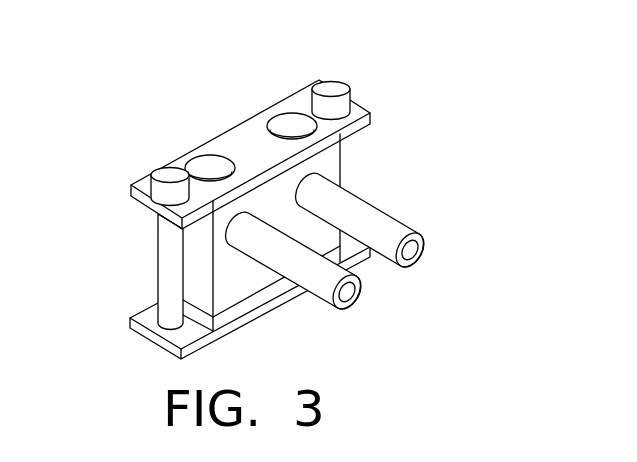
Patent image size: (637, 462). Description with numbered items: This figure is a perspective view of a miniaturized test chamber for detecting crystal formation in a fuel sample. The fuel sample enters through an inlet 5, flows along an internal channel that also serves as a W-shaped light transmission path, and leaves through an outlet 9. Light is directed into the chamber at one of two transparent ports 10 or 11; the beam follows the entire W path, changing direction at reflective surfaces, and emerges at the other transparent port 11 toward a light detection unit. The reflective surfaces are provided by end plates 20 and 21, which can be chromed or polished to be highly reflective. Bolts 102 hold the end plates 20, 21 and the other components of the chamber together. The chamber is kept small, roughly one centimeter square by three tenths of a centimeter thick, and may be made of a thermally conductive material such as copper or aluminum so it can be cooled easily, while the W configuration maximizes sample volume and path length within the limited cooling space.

The inlet 5 is at (285, 255).
The outlet 9 is at (355, 213).
The transparent port 10 is at (208, 175).
The transparent port 11 is at (290, 128).
The end plate 20 is at (145, 203).
The end plate 21 is at (158, 341).
The bolts 102 is at (148, 176).